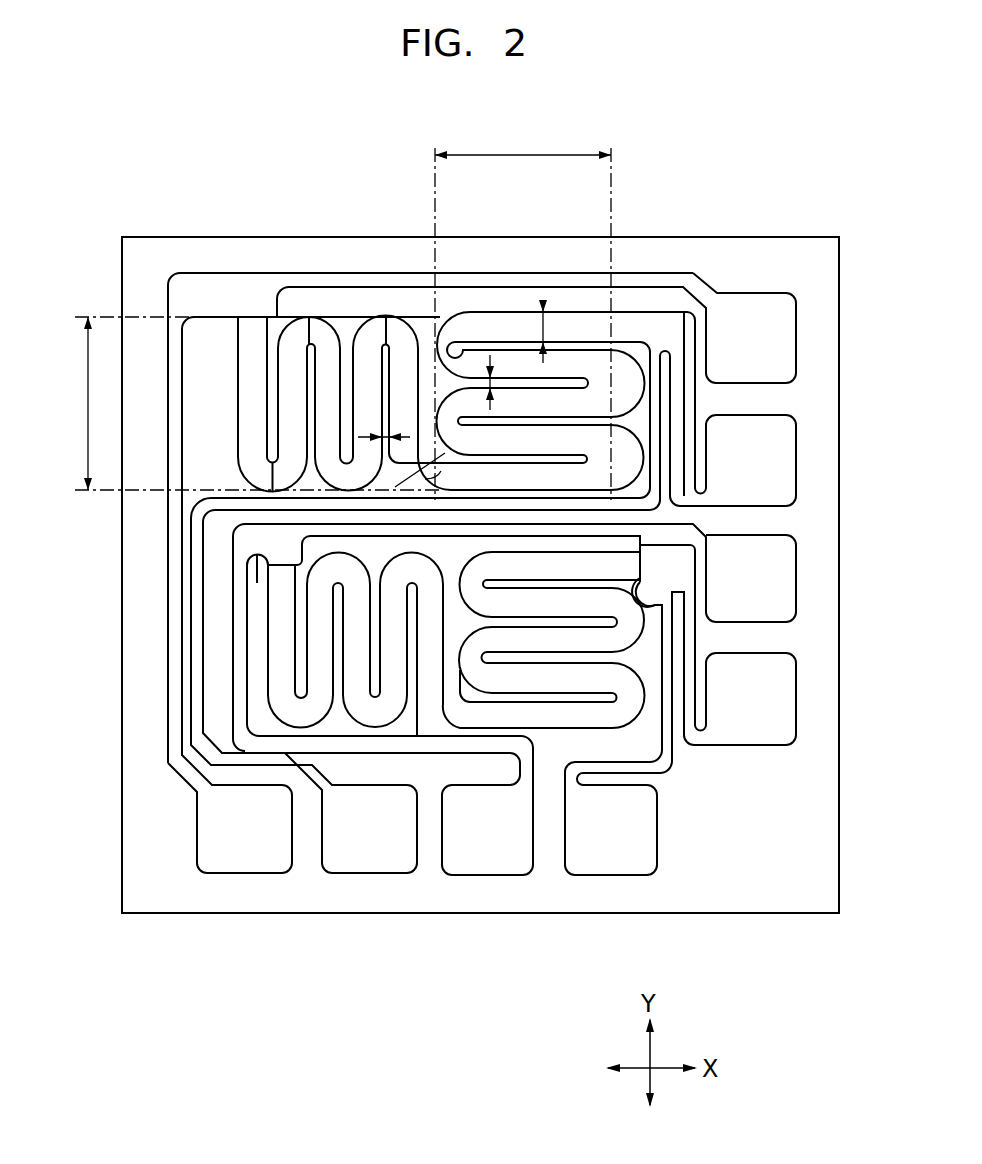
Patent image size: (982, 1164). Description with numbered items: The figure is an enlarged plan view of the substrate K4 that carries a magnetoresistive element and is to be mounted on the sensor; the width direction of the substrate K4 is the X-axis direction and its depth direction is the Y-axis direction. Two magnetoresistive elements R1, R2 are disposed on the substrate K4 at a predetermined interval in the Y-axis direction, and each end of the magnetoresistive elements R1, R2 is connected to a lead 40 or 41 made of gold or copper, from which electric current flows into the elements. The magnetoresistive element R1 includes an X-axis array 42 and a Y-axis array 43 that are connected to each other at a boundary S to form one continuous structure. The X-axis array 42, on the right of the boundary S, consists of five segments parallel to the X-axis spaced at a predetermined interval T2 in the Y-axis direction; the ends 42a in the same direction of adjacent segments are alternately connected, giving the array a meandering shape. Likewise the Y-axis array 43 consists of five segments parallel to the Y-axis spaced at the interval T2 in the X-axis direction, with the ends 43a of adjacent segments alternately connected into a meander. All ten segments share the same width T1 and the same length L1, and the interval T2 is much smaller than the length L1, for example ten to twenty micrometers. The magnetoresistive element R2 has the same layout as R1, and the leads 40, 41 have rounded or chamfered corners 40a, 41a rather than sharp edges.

The lead 40 is at (222, 290).
The rounded or chamfered corner of lead 40 40a is at (258, 580).
The lead 41 is at (652, 328).
The rounded or chamfered corner of lead 41 41a is at (652, 608).
The X-axis array 42 is at (512, 300).
The ends of X-axis segments 42a is at (462, 352).
The Y-axis array 43 is at (302, 300).
The ends of Y-axis segments 43a is at (280, 480).
The magnetoresistive element R1 is at (343, 315).
The magnetoresistive element R2 is at (548, 735).
The width of segments T1 is at (546, 330).
The predetermined interval T2 is at (486, 362).
The boundary S is at (424, 473).
The length of segments L1 is at (333, 314).
The substrate K4 is at (745, 870).